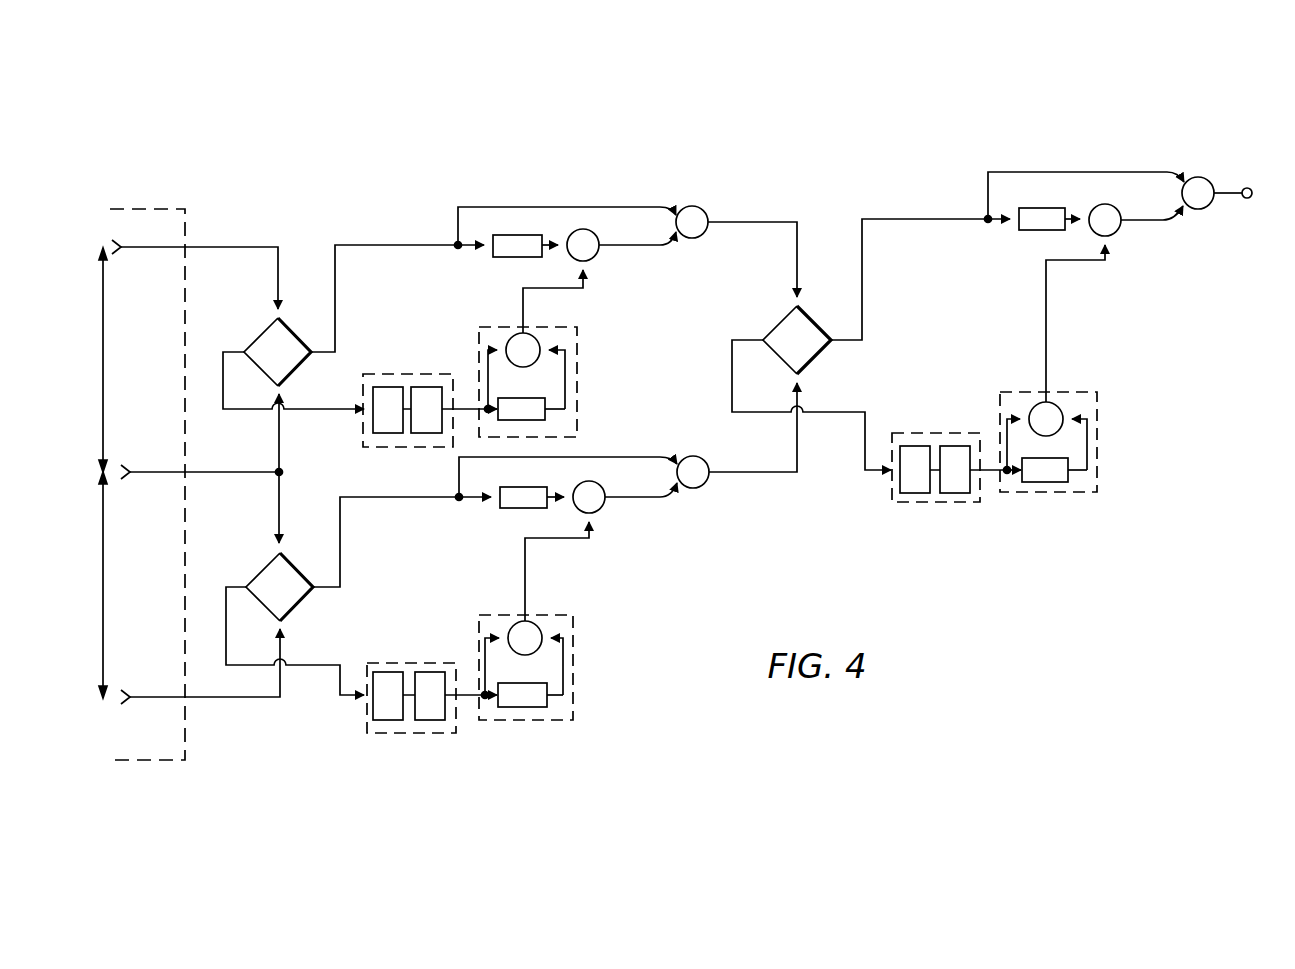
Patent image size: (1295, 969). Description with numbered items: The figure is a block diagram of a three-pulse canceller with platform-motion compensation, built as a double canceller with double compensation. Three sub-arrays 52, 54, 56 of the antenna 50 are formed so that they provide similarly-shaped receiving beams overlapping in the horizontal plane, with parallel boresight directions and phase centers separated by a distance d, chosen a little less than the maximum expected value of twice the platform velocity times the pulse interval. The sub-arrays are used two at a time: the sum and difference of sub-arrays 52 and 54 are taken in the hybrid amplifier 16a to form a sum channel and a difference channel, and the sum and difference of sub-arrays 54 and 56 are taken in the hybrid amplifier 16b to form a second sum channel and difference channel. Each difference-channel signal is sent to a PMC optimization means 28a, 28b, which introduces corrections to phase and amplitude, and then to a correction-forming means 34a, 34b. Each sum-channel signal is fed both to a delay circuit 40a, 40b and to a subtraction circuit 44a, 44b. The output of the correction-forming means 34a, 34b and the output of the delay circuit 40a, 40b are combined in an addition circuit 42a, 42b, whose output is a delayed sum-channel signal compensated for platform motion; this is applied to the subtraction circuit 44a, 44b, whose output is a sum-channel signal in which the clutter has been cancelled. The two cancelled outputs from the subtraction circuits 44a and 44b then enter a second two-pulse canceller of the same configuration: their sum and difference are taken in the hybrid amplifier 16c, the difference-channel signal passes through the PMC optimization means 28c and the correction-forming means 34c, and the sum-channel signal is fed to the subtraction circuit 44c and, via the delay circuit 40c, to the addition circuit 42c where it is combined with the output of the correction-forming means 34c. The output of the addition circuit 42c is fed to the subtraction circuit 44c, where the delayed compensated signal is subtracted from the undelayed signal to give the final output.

The antenna 50 is at (184, 206).
The sub-array 52 is at (172, 250).
The sub-array 54 is at (175, 476).
The sub-array 56 is at (175, 701).
The hybrid amplifier 16a is at (266, 331).
The hybrid amplifier 16b is at (300, 608).
The hybrid amplifier 16c is at (783, 322).
The PMC optimization means 28a is at (428, 373).
The PMC optimization means 28b is at (432, 662).
The PMC optimization means 28c is at (896, 504).
The correction-forming means 34a is at (580, 426).
The correction-forming means 34b is at (576, 707).
The correction-forming means 34c is at (1050, 493).
The delay circuit 40a is at (509, 258).
The delay circuit 40b is at (512, 509).
The delay circuit 40c is at (1047, 231).
The addition circuit 42a is at (595, 259).
The addition circuit 42b is at (601, 551).
The addition circuit 42c is at (1117, 233).
The subtraction circuit 44a is at (706, 212).
The subtraction circuit 44b is at (700, 487).
The subtraction circuit 44c is at (1200, 210).